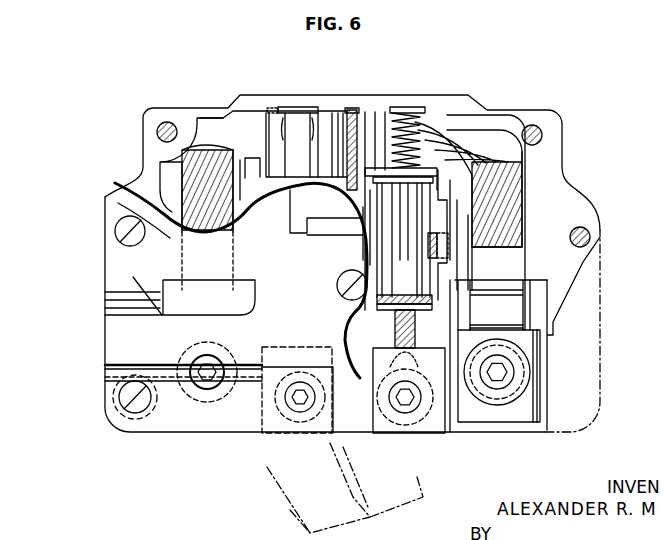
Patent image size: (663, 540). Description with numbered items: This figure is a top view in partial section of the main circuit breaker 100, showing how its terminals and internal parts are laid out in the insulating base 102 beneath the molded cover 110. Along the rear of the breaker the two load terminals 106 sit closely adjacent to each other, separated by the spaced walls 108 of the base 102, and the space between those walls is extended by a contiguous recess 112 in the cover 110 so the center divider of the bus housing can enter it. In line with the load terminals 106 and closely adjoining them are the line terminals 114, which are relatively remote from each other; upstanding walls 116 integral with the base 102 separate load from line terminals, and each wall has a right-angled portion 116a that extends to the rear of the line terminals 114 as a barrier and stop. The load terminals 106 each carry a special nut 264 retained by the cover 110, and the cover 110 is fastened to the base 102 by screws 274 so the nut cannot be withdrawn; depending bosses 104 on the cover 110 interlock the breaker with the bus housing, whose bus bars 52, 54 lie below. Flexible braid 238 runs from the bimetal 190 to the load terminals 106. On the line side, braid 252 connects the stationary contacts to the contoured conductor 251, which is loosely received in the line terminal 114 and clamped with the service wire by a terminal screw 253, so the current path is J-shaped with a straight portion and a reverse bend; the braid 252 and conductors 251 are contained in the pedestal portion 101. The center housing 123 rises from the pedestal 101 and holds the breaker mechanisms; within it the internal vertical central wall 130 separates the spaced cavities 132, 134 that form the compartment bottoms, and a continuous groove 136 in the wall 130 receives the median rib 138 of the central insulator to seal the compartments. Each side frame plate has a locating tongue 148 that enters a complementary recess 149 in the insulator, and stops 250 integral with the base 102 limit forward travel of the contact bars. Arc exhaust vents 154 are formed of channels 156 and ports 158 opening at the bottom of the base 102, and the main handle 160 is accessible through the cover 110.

The circuit breaker 100 is at (90, 345).
The pedestal portion 101 is at (127, 213).
The base 102 is at (523, 112).
The depending bosses 104 is at (126, 442).
The load terminals 106 is at (297, 441).
The spaced walls 108 is at (355, 365).
The cover 110 is at (108, 322).
The recess 112 is at (350, 408).
The line terminals 114 is at (532, 436).
The upstanding walls 116 is at (466, 302).
The right angled portion 116a is at (503, 427).
The center housing 123 is at (308, 277).
The internal vertical central wall 130 is at (343, 137).
The cavity 132 is at (438, 150).
The cavity 134 is at (262, 155).
The groove 136 is at (368, 125).
The median projection or rib 138 is at (348, 112).
The locating tongue 148 is at (448, 250).
The recess 149 is at (420, 329).
The arc exhaust passages or vents 154 is at (323, 123).
The channels 156 is at (312, 138).
The ports 158 is at (262, 130).
The main handle 160 is at (333, 229).
The bimetal 190 is at (385, 300).
The flexible conductive braid 238 is at (415, 326).
The stops 250 is at (462, 130).
The contoured conductor member 251 is at (187, 293).
The flexible conductive braid 252 is at (205, 190).
The terminal screws 253 is at (520, 360).
The special nut 264 is at (285, 445).
The screws 274 is at (160, 126).
The bus bar 52 is at (356, 491).
The bus bar 54 is at (267, 510).